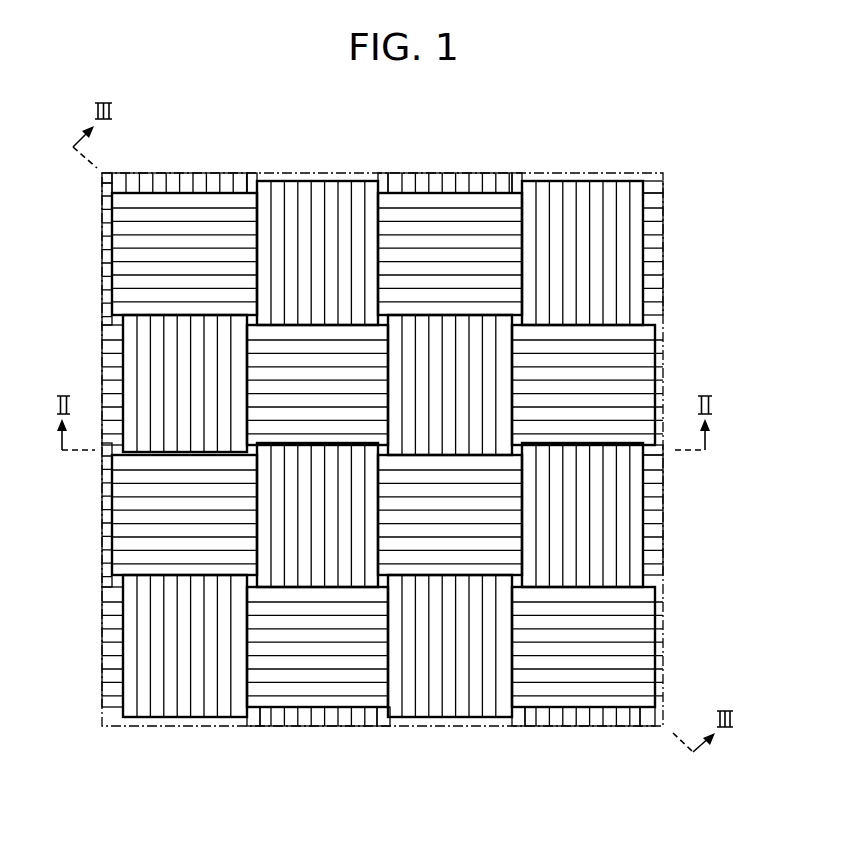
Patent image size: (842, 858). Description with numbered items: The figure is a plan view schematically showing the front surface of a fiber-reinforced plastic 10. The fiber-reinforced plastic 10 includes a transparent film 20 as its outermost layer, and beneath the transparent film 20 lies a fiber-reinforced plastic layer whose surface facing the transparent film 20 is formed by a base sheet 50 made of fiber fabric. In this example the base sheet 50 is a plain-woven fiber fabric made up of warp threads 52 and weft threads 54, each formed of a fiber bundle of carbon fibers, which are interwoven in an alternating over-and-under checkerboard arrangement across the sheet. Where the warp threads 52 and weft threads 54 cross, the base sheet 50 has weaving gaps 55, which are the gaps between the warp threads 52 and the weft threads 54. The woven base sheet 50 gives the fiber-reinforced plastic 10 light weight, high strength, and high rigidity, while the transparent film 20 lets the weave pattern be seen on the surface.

The fiber-reinforced plastic 10 is at (648, 120).
The transparent film 20 is at (270, 180).
The base sheet 50 is at (670, 250).
The warp threads 52 is at (185, 188).
The weft threads 54 is at (650, 213).
The weaving gaps 55 is at (252, 712).